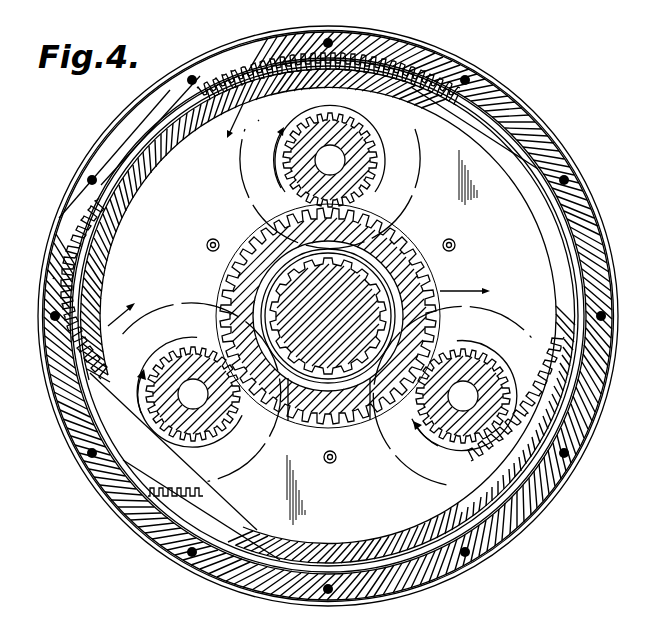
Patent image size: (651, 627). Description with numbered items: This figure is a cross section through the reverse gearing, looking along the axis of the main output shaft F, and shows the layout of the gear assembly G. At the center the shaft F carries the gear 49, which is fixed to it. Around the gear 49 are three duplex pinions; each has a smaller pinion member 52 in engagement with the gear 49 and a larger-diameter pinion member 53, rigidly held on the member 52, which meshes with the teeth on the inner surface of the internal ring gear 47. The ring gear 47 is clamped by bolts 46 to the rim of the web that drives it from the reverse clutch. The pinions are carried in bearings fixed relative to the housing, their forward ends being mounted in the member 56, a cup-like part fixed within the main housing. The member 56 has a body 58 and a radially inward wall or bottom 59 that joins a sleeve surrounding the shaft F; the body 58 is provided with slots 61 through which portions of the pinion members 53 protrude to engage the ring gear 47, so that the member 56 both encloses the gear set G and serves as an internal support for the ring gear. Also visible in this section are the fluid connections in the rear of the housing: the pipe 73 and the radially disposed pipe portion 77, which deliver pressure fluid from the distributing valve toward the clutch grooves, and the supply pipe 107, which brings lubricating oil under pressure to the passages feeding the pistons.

The gear assembly G is at (255, 78).
The bolts 46 is at (472, 92).
The ring gear 47 is at (442, 78).
The gear 49 is at (438, 330).
The pinion member 52 is at (357, 161).
The pinion member 53 is at (432, 94).
The member 56 is at (521, 259).
The cup-like body 58 is at (548, 178).
The wall 59 is at (530, 301).
The slots 61 is at (570, 373).
The pipe 73 is at (450, 239).
The pipe portion 77 is at (213, 239).
The supply pipe 107 is at (342, 469).
The main output shaft F is at (381, 293).